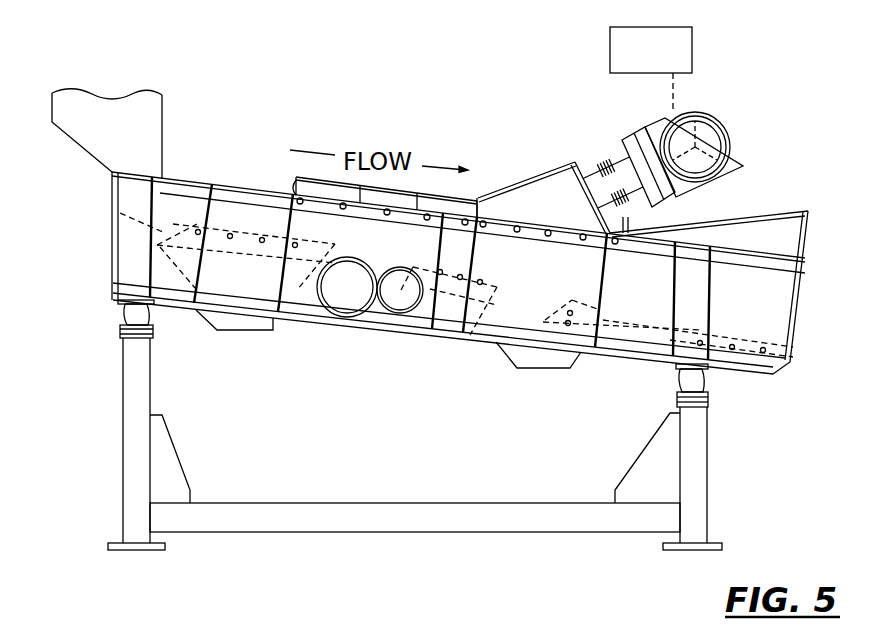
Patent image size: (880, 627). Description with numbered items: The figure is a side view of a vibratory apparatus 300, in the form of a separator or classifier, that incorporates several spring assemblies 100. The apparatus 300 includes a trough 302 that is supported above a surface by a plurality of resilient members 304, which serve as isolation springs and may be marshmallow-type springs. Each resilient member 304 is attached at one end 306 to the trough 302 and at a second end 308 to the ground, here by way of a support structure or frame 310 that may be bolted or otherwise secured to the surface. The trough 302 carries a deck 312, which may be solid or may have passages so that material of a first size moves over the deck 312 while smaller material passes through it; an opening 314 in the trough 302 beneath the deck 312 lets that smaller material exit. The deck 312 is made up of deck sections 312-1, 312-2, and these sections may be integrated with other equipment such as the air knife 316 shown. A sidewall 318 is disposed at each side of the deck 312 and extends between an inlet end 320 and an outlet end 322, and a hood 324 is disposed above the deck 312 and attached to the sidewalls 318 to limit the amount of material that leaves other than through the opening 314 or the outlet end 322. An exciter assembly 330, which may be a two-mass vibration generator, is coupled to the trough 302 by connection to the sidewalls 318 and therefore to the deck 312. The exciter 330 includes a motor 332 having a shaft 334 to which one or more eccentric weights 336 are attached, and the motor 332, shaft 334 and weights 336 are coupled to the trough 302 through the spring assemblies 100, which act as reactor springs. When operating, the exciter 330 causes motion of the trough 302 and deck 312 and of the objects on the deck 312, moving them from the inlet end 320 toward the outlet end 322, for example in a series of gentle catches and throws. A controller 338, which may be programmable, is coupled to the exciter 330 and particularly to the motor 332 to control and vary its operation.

The spring assembly 100 is at (596, 148).
The vibratory apparatus 300 is at (772, 131).
The trough 302 is at (808, 253).
The resilient members 304 is at (143, 311).
The one end 306 is at (117, 298).
The second end 308 is at (120, 331).
The support structure or frame 310 is at (343, 513).
The deck 312 is at (255, 220).
The first deck section 312-1 is at (190, 215).
The second deck section 312-2 is at (792, 350).
The opening 314 is at (238, 338).
The air knife 316 is at (449, 352).
The sidewall 318 is at (133, 240).
The inlet end 320 is at (112, 202).
The outlet end 322 is at (798, 325).
The hood 324 is at (283, 192).
The exciter assembly 330 is at (692, 101).
The motor 332 is at (735, 140).
The shaft 334 is at (703, 170).
The eccentric weights 336 is at (668, 120).
The controller 338 is at (627, 52).